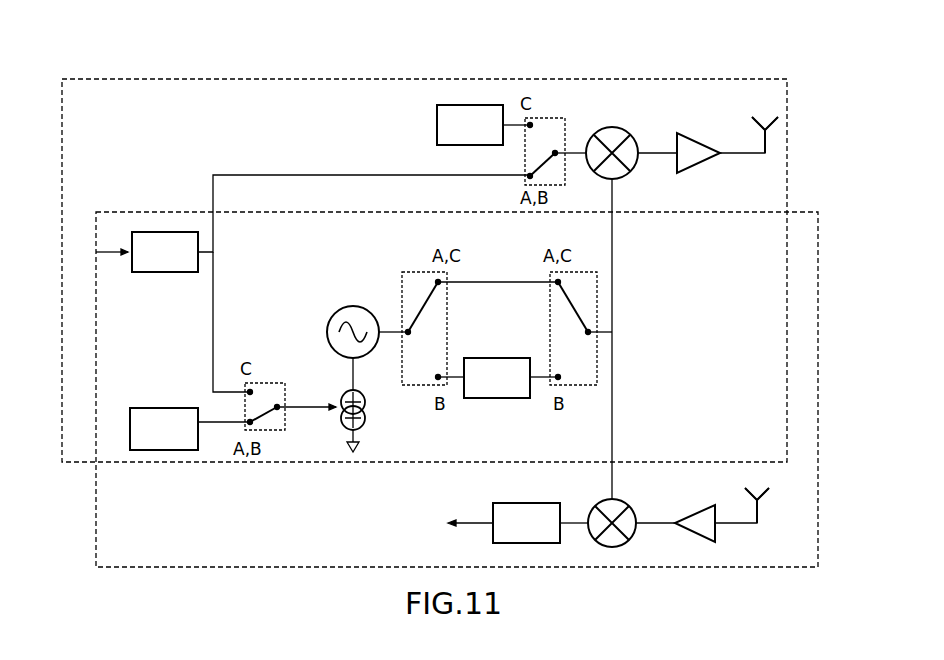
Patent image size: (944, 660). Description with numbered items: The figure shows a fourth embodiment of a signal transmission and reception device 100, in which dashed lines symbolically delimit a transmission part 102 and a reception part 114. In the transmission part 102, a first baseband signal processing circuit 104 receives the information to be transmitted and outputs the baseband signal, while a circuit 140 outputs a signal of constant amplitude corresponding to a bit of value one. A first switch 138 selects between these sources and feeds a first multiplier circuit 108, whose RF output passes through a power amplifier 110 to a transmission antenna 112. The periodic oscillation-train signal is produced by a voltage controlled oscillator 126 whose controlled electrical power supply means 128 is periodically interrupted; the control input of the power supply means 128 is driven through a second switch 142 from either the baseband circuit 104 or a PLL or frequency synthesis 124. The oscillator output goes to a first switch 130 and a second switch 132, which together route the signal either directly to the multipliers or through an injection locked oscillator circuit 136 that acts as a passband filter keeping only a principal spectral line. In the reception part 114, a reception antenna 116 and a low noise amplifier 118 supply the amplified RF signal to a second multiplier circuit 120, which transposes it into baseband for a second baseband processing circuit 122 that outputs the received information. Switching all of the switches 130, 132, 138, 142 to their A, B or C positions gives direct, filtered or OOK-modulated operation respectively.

The radiofrequency communication device 100 is at (803, 85).
The transmission part 102 is at (688, 80).
The first baseband signal processing circuit 104 is at (165, 232).
The first multiplier circuit 108 is at (612, 127).
The power amplifier 110 is at (706, 140).
The transmission antenna 112 is at (768, 145).
The reception part 114 is at (820, 268).
The reception antenna 116 is at (760, 517).
The low noise amplifier 118 is at (698, 538).
The second multiplier circuit 120 is at (618, 500).
The second baseband processing circuit 122 is at (525, 503).
The PLL or frequency synthesis 124 is at (165, 408).
The voltage controlled oscillator 126 is at (335, 312).
The controlled electrical power supply means 128 is at (366, 400).
The first switch 130 is at (410, 272).
The second switch 132 is at (598, 272).
The injection locked oscillator circuit 136 is at (497, 358).
The first switch 138 is at (552, 118).
The circuit outputting a constant amplitude signal 140 is at (470, 105).
The second switch 142 is at (272, 383).